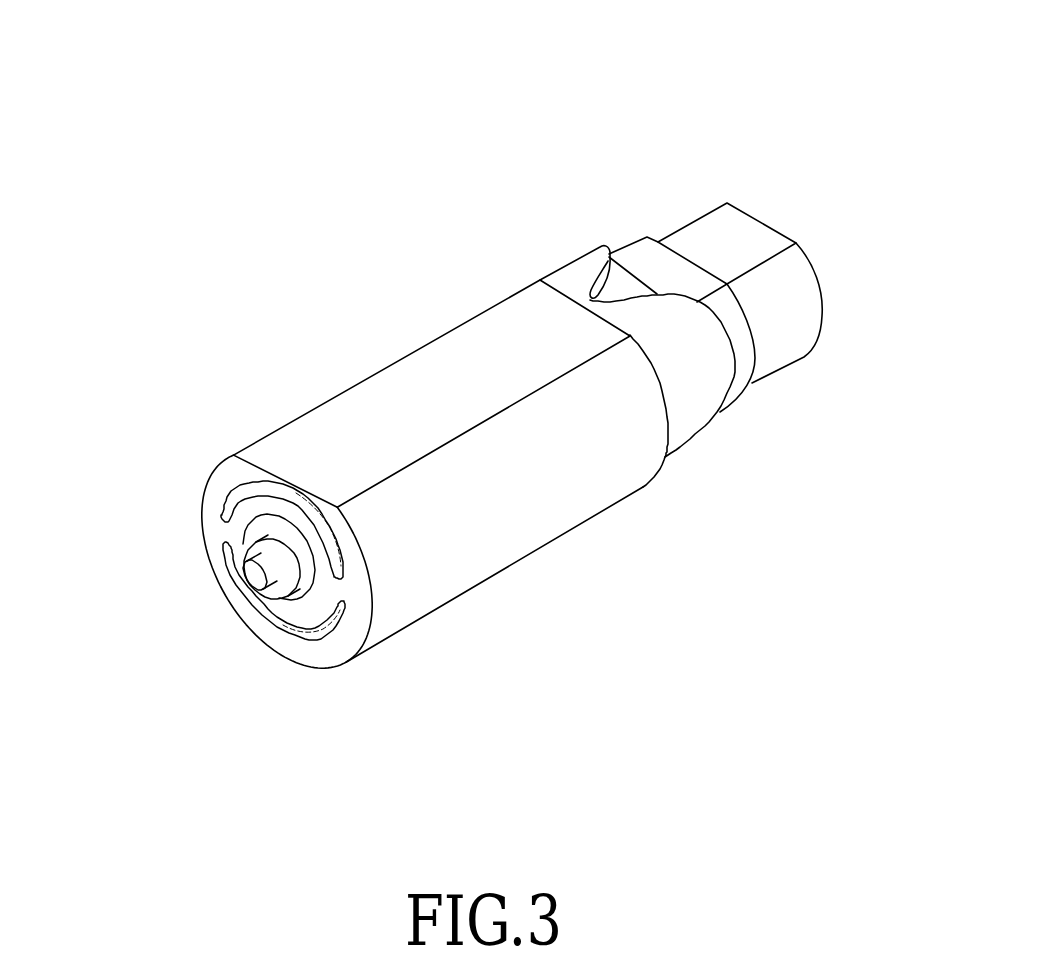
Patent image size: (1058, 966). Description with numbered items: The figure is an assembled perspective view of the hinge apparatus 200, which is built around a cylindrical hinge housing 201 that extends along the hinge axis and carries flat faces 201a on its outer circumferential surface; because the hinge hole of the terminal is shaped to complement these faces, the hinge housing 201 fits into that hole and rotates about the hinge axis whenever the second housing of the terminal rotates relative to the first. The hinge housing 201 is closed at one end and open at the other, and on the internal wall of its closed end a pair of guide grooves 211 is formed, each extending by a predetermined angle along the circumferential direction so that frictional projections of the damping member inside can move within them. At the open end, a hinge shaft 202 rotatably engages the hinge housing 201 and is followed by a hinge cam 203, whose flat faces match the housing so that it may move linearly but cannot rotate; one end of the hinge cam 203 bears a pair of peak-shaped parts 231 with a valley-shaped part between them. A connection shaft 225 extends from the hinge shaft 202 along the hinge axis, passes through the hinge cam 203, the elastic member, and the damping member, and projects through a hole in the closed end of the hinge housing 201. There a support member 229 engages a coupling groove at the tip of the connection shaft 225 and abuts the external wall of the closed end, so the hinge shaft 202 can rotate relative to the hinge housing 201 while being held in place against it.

The hinge apparatus 200 is at (565, 51).
The hinge housing 201 is at (546, 584).
The flat faces 201a is at (428, 375).
The hinge shaft 202 is at (803, 316).
The hinge cam 203 is at (701, 408).
The guide grooves 211 is at (237, 505).
The connection shaft 225 is at (264, 573).
The support member 229 is at (288, 603).
The peak-shaped parts 231 is at (718, 362).